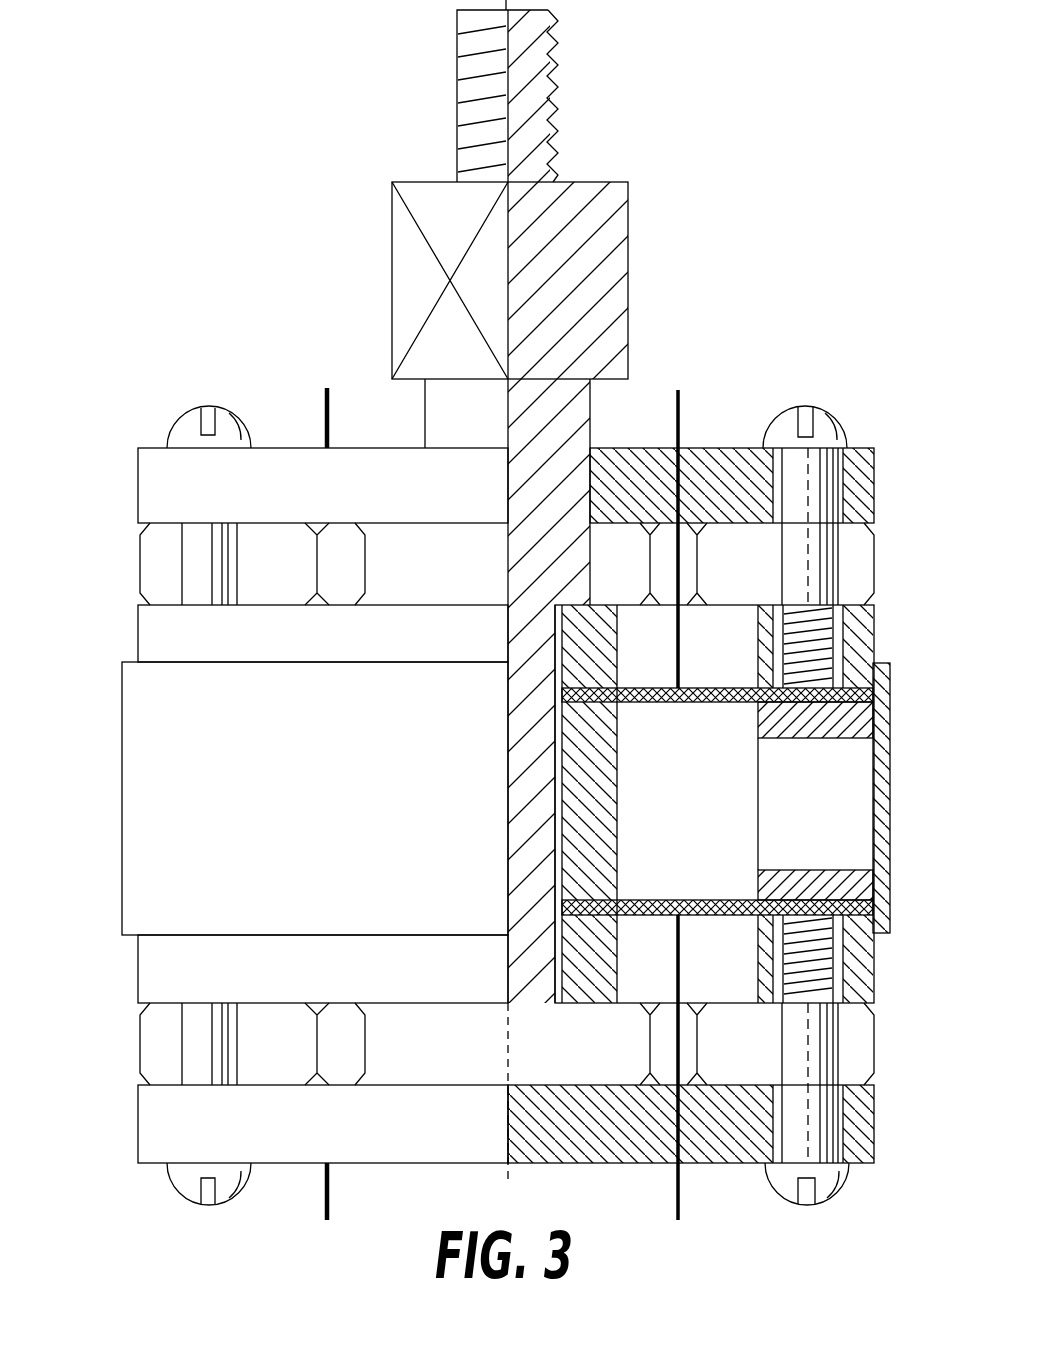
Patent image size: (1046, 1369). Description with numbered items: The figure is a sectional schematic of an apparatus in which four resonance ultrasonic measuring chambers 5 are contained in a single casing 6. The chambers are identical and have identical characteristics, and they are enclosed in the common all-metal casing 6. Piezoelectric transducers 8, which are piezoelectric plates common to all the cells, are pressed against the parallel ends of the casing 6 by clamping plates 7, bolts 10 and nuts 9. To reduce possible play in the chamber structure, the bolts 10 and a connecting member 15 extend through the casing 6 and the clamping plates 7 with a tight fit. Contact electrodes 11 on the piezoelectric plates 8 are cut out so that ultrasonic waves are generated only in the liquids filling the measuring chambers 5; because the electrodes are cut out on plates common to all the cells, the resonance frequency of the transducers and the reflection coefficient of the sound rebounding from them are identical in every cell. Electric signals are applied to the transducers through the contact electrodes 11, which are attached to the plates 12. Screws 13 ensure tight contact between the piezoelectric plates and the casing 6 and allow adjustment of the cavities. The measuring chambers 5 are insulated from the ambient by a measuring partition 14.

The measuring chamber 5 is at (745, 850).
The casing 6 is at (893, 722).
The clamping plate 7 is at (860, 630).
The piezoelectric transducer 8 is at (865, 908).
The nut 9 is at (153, 565).
The bolt 10 is at (850, 1053).
The contact electrode 11 is at (680, 396).
The plate 12 is at (153, 473).
The screw 13 is at (820, 410).
The measuring partition 14 is at (138, 744).
The connecting member 15 is at (613, 252).